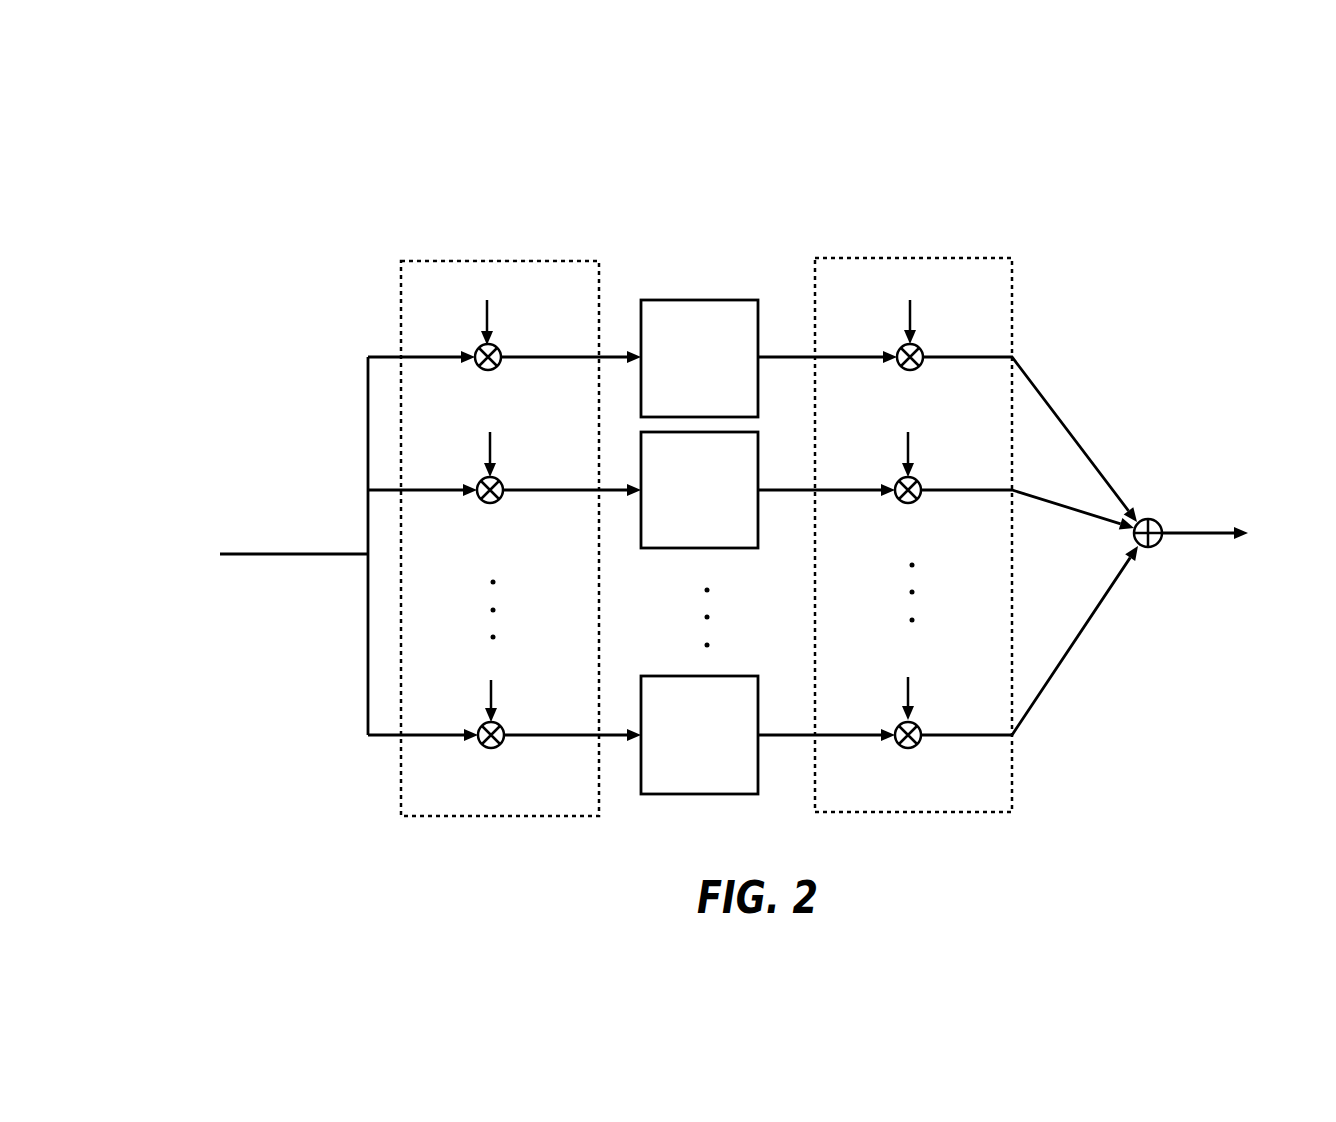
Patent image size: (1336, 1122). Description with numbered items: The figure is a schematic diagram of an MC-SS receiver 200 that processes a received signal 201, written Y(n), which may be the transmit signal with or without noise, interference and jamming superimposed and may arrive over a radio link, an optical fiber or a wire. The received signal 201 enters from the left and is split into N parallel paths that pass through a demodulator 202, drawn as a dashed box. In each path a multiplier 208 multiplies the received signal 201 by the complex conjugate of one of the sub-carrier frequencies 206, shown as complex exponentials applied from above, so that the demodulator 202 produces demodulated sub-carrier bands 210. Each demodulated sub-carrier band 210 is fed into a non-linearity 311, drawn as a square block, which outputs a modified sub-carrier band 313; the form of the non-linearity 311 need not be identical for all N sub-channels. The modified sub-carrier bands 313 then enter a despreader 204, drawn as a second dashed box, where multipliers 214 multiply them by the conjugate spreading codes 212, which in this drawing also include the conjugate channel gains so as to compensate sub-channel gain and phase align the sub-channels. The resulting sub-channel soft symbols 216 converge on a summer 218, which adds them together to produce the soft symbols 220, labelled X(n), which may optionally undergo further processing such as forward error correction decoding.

The MC-SS receiver 200 is at (236, 118).
The received signal 201 is at (313, 552).
The demodulator 202 is at (413, 260).
The despreader 204 is at (823, 258).
The sub-carrier frequencies 206 is at (487, 330).
The multipliers 208 is at (497, 370).
The demodulated sub-carrier bands 210 is at (603, 355).
The non-linearity 311 is at (700, 300).
The modified sub-carrier bands 313 is at (760, 358).
The conjugate spreading codes 212 is at (908, 318).
The multipliers 214 is at (918, 368).
The sub-channel soft symbols 216 is at (1048, 408).
The summer 218 is at (1148, 518).
The soft symbols 220 is at (1199, 531).